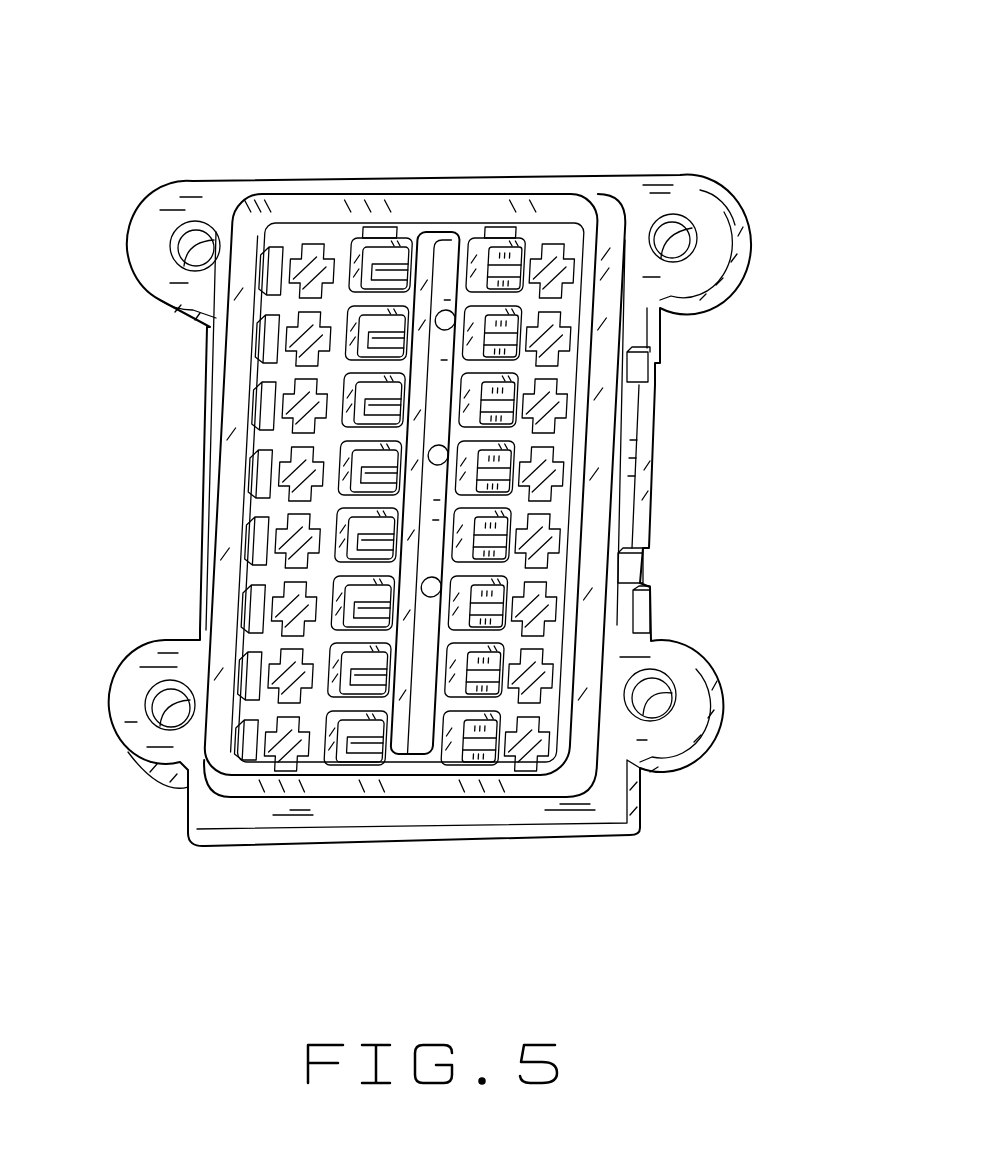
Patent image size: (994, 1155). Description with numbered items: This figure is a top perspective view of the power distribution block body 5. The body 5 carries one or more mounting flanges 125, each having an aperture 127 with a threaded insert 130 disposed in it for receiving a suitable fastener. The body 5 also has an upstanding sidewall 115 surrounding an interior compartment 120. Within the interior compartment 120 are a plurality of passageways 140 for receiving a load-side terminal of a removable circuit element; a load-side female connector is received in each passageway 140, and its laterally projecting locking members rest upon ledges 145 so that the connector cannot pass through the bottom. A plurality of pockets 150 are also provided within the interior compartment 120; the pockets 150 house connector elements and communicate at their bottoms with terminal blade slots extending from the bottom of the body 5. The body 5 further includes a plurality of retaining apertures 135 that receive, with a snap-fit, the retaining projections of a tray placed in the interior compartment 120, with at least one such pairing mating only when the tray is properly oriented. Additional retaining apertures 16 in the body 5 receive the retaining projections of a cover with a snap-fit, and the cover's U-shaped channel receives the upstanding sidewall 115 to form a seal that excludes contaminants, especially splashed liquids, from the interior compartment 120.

The body 5 is at (687, 124).
The retaining apertures 16 is at (378, 226).
The upstanding sidewall 115 is at (337, 194).
The interior compartment 120 is at (440, 216).
The mounting flanges 125 is at (712, 221).
The aperture 127 is at (690, 243).
The threaded insert 130 is at (682, 223).
The retaining apertures 135 is at (262, 330).
The passageways 140 is at (280, 667).
The ledges 145 is at (300, 324).
The pockets 150 is at (490, 687).